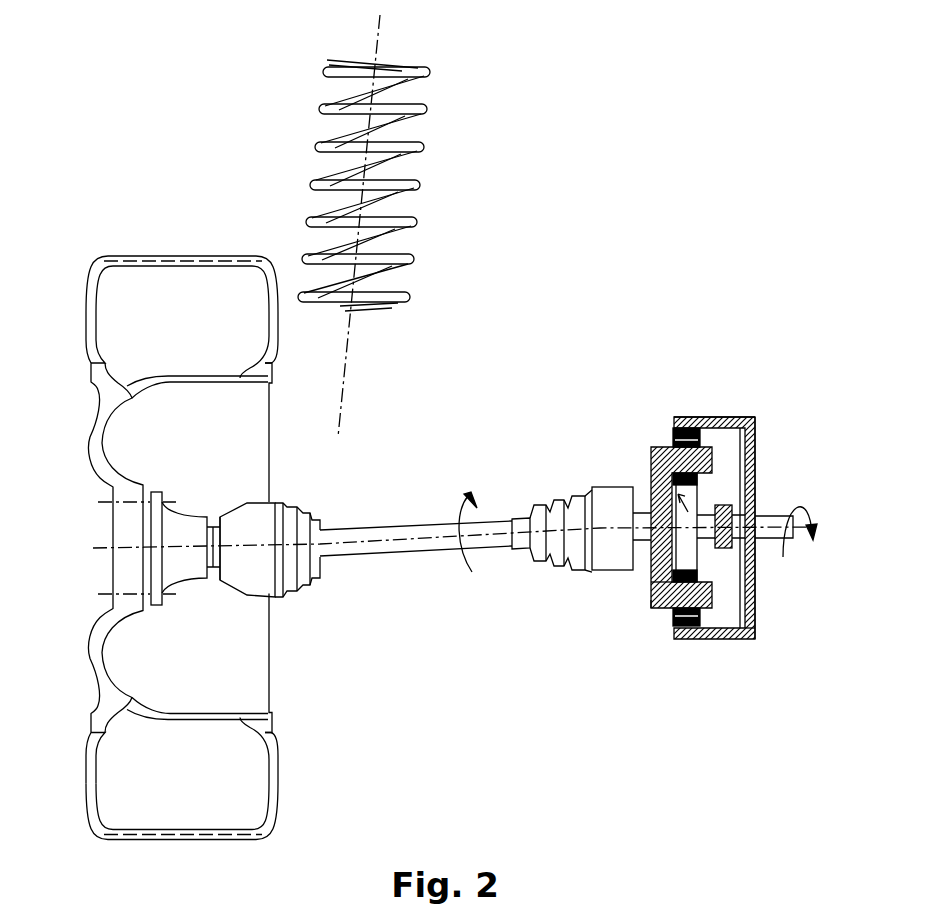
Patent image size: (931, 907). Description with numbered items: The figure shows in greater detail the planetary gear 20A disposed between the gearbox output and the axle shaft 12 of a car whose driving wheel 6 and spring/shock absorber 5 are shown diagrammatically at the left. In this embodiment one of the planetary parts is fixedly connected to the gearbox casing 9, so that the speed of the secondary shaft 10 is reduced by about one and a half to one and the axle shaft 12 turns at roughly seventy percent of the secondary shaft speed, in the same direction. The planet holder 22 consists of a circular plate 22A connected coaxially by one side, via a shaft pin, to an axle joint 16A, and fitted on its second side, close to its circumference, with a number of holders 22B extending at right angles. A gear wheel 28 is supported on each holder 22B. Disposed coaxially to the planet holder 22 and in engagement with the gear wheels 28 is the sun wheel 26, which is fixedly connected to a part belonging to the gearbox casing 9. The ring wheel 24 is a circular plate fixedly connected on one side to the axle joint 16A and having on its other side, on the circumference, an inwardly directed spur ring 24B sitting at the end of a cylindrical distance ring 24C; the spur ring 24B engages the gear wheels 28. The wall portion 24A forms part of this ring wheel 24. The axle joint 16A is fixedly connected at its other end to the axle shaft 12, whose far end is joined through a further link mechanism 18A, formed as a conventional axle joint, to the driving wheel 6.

The spring/shock absorber 5 is at (450, 181).
The driving wheel 6 is at (126, 240).
The gearbox casing 9 is at (725, 505).
The secondary shaft 10 is at (766, 540).
The axle shaft 12 is at (409, 540).
The axle joint 16A is at (600, 512).
The further link mechanism 18A is at (305, 573).
The planetary gear 20A is at (772, 470).
The planet holder 22 is at (632, 600).
The circular plate 22A is at (651, 582).
The holder 22B is at (651, 603).
The ring wheel 24 is at (714, 645).
The housing bottom wall 24A is at (755, 622).
The spur ring 24B is at (672, 432).
The cylindrical distance ring 24C is at (701, 418).
The sun wheel 26 is at (652, 466).
The gear wheel 28 is at (673, 436).